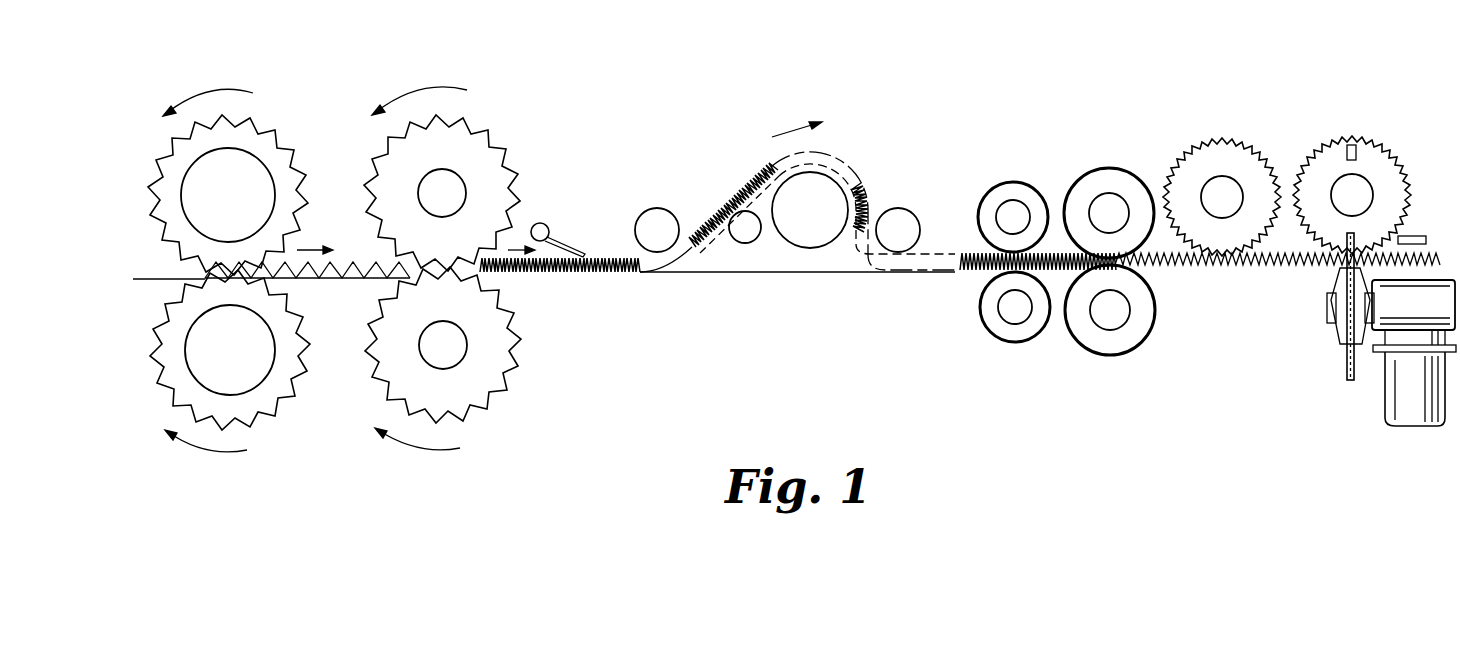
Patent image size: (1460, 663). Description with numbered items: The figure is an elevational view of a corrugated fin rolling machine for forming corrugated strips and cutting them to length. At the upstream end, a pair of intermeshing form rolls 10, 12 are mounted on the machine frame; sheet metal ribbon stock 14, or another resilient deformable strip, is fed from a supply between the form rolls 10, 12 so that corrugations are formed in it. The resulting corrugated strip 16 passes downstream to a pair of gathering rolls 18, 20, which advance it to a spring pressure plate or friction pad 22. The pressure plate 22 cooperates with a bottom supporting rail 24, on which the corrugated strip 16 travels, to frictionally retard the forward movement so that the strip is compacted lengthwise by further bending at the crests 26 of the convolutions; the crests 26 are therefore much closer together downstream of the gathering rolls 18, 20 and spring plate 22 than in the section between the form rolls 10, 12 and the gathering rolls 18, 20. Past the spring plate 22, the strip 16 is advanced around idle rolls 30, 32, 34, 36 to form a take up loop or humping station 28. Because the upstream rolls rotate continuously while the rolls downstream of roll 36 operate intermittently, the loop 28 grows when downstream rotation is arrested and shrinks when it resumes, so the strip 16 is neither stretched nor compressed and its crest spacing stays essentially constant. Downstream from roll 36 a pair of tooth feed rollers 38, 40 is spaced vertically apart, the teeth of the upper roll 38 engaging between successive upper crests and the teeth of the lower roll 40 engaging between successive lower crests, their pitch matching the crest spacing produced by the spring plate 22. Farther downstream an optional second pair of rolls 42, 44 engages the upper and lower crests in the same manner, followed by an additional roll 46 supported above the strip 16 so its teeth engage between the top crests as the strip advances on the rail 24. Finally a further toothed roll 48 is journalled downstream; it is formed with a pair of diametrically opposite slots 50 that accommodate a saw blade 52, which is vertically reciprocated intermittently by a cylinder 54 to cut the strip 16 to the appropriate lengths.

The form roll 10 is at (267, 165).
The form roll 12 is at (258, 393).
The sheet metal ribbon stock 14 is at (163, 278).
The corrugated strip 16 is at (338, 280).
The gathering roll 18 is at (485, 158).
The gathering roll 20 is at (507, 378).
The spring pressure plate 22 is at (567, 250).
The bottom supporting rail 24 is at (680, 292).
The crests 26 is at (607, 258).
The take up loop 28 is at (830, 142).
The idle roll 30 is at (657, 210).
The idle roll 32 is at (745, 243).
The idle roll 34 is at (813, 248).
The idle roll 36 is at (913, 225).
The tooth feed roller 38 is at (1022, 185).
The tooth feed roller 40 is at (1028, 340).
The second pair roll 42 is at (1090, 172).
The second pair roll 44 is at (1078, 342).
The additional roll 46 is at (1277, 187).
The toothed roll 48 is at (1408, 185).
The slots 50 is at (1352, 143).
The saw blade 52 is at (1345, 360).
The cylinder 54 is at (1385, 395).